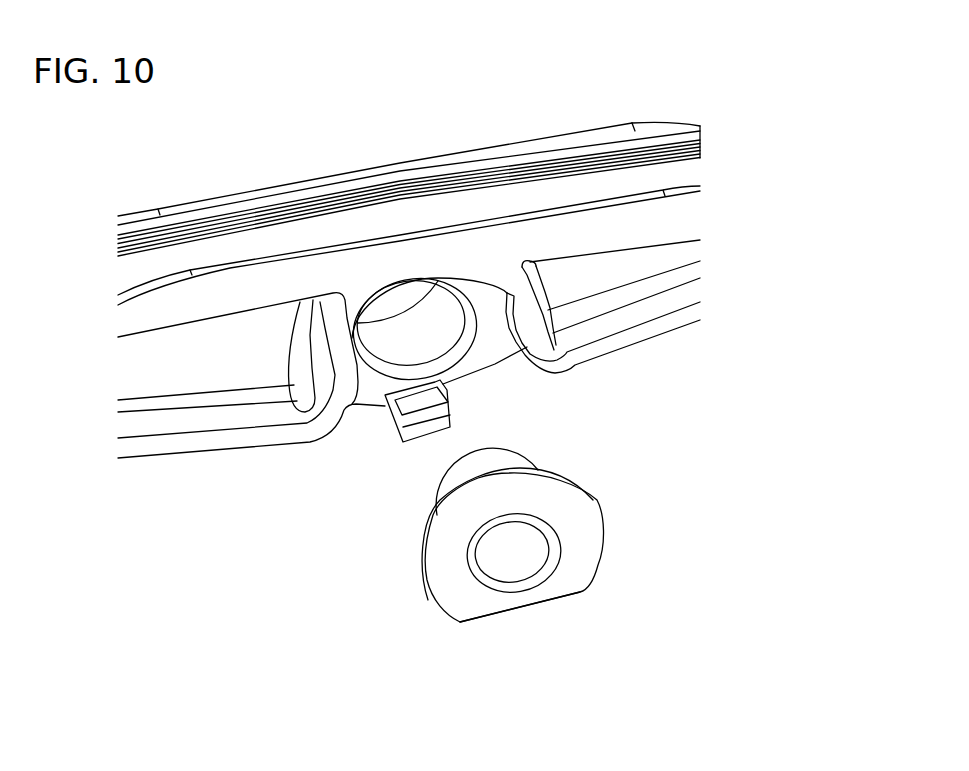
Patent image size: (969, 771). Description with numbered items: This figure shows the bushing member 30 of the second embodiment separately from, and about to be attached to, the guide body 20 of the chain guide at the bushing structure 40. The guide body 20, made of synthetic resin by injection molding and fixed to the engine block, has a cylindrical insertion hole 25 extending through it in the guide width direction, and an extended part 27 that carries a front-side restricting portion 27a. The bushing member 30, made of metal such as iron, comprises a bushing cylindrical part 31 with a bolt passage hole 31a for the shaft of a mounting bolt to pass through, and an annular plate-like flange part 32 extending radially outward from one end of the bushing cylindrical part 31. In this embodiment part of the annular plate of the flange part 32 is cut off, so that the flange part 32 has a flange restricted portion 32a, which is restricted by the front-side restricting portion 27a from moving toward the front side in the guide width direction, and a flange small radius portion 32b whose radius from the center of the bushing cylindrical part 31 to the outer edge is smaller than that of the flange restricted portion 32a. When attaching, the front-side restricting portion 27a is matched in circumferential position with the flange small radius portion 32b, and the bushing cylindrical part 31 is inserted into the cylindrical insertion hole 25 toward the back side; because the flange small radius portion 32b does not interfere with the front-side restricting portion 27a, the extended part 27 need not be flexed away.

The guide body 20 is at (662, 116).
The cylindrical insertion hole 25 is at (401, 304).
The extended part 27 is at (385, 402).
The front-side restricting portion 27a is at (450, 407).
The bushing member 30 is at (526, 578).
The bushing cylindrical part 31 is at (455, 484).
The bolt passage hole 31a is at (523, 557).
The flange part 32 is at (575, 517).
The flange restricted portion 32a is at (600, 537).
The flange small radius portion 32b is at (518, 600).
The bushing structure 40 is at (459, 268).